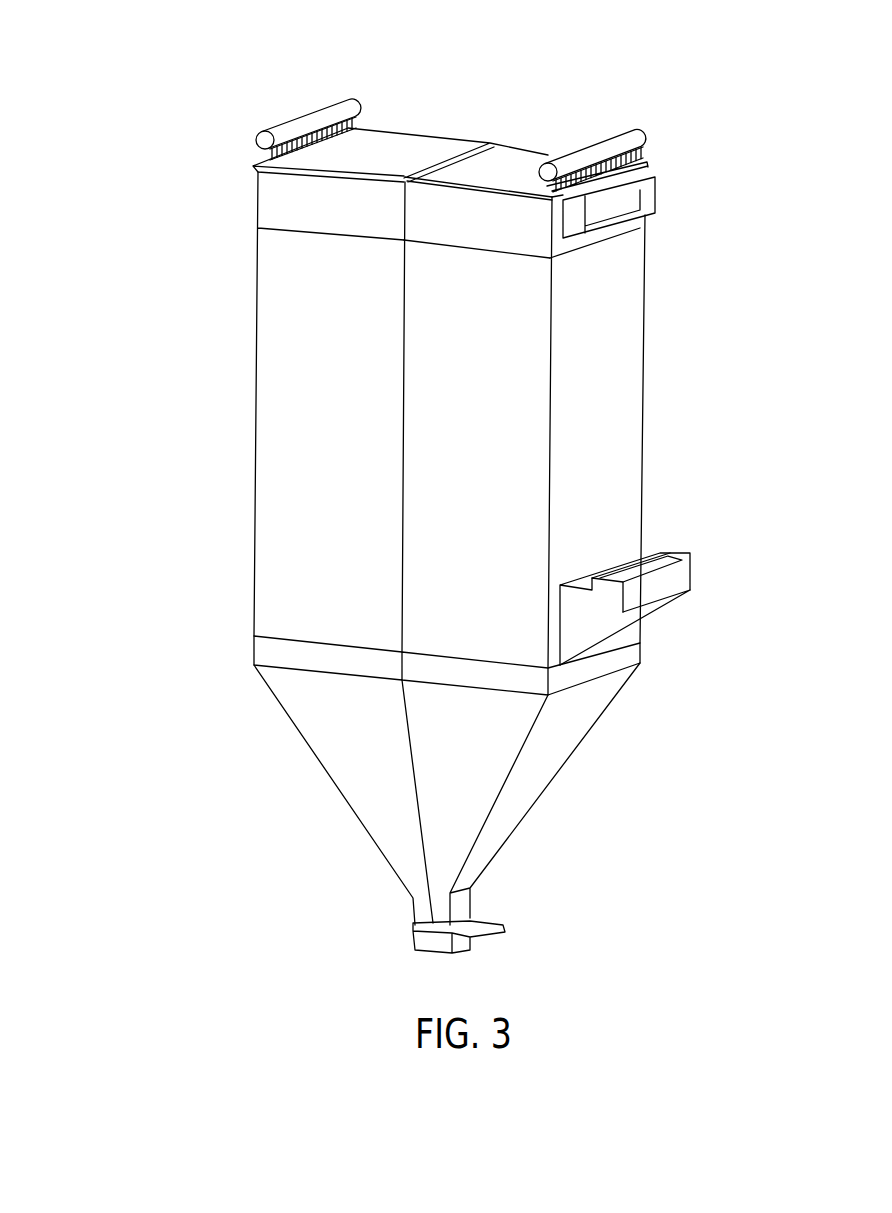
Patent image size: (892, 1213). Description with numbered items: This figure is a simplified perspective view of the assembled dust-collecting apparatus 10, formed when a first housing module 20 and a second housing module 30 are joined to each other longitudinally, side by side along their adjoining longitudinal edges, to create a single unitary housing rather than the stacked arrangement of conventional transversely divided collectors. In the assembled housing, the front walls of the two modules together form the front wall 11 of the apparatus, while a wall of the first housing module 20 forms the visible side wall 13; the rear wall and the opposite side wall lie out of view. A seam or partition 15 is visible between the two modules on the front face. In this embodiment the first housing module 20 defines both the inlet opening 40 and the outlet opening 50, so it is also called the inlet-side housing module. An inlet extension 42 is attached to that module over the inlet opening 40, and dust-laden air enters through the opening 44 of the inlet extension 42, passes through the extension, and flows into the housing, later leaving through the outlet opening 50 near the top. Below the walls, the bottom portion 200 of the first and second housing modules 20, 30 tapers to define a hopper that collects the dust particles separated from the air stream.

The dust-collecting apparatus 10 is at (223, 97).
The front wall 11 is at (317, 597).
The side wall 13 is at (610, 413).
The partition 15 is at (402, 353).
The first housing module 20 is at (577, 375).
The second housing module 30 is at (280, 432).
The inlet opening 40 is at (593, 570).
The inlet extension 42 is at (620, 625).
The opening of the inlet extension 44 is at (668, 560).
The outlet opening 50 is at (607, 205).
The bottom portion 200 is at (563, 780).